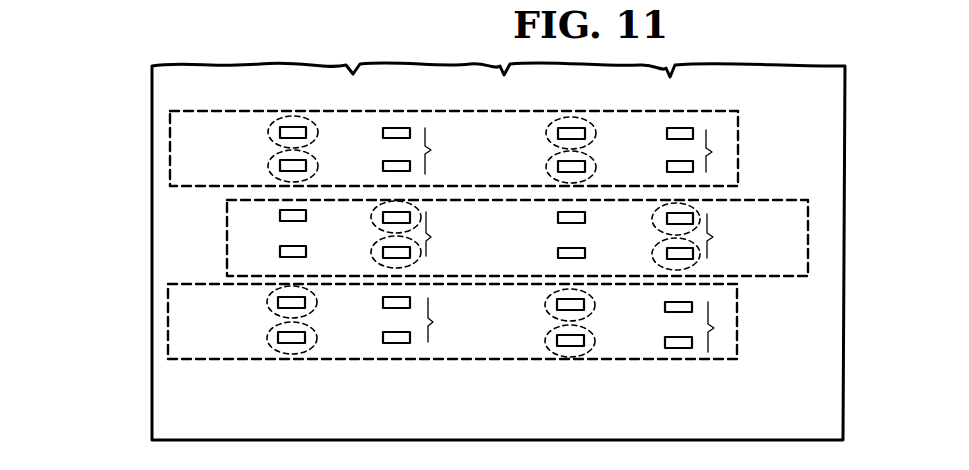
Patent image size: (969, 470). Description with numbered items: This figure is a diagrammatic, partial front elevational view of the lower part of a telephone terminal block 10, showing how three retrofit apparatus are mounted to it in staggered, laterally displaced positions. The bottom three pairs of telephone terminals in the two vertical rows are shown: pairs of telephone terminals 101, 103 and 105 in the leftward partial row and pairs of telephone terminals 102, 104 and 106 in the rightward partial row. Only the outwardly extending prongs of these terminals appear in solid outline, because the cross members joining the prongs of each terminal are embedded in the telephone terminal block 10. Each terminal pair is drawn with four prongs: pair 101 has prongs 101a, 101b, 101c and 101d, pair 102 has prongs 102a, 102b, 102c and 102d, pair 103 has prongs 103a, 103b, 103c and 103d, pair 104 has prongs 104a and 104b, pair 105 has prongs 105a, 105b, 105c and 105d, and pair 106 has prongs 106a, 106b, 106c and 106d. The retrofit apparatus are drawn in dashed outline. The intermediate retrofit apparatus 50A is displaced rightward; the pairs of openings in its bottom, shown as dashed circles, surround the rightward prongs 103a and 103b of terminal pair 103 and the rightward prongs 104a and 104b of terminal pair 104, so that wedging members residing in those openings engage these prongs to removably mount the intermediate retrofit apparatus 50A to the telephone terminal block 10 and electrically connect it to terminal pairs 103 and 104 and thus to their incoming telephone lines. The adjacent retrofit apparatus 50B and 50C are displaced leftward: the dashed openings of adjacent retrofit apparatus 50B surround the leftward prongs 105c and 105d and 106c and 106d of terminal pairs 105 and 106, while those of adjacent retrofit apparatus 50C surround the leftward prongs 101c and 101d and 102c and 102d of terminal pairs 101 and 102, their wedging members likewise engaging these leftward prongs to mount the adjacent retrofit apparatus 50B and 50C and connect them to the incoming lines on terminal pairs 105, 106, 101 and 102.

The telephone terminal block 10 is at (135, 226).
The intermediate retrofit apparatus 50A is at (828, 240).
The adjacent retrofit apparatus 50B is at (757, 330).
The adjacent retrofit apparatus 50C is at (756, 150).
The pair of telephone terminals 101 is at (431, 150).
The solder pad 101a is at (403, 127).
The solder pad 101b is at (410, 171).
The leftward prong 101c is at (281, 132).
The leftward prong 101d is at (280, 166).
The pair of telephone terminals 102 is at (710, 151).
The solder pad 102a is at (685, 128).
The solder pad 102b is at (690, 172).
The leftward prong 102c is at (558, 130).
The leftward prong 102d is at (586, 166).
The pair of telephone terminals 103 is at (431, 237).
The rightward prong 103a is at (410, 215).
The rightward prong 103b is at (410, 257).
The solder pad 103c is at (280, 214).
The solder pad 103d is at (280, 252).
The pair of telephone terminals 104 is at (713, 237).
The rightward prong 104a is at (693, 214).
The rightward prong 104b is at (693, 259).
The pair of telephone terminals 105 is at (433, 322).
The solder pad 105a is at (410, 300).
The solder pad 105b is at (410, 342).
The leftward prong 105c is at (278, 300).
The leftward prong 105d is at (278, 337).
The pair of telephone terminals 106 is at (714, 328).
The solder pad 106a is at (692, 303).
The solder pad 106b is at (693, 349).
The leftward prong 106c is at (556, 302).
The leftward prong 106d is at (580, 348).